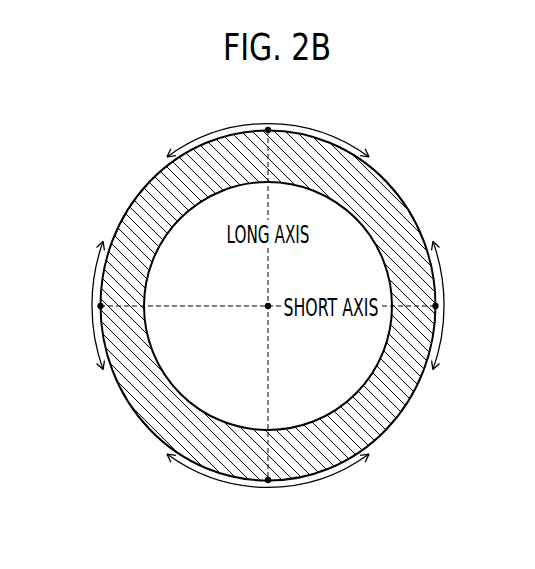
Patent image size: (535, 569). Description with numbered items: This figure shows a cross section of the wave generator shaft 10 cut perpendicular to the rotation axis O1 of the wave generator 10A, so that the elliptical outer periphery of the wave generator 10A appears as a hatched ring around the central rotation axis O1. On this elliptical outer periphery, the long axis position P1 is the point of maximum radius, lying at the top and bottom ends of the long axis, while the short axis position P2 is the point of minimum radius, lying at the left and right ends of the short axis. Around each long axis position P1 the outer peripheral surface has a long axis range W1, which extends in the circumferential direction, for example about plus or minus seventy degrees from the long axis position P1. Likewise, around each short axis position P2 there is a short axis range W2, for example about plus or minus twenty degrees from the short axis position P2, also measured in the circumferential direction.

The wave generator shaft 10 is at (408, 137).
The wave generator 10A is at (386, 218).
The rotation axis O1 is at (252, 323).
The long axis position P1 is at (268, 131).
The short axis position P2 is at (100, 307).
The long axis range W1 is at (268, 307).
The short axis range W2 is at (269, 305).